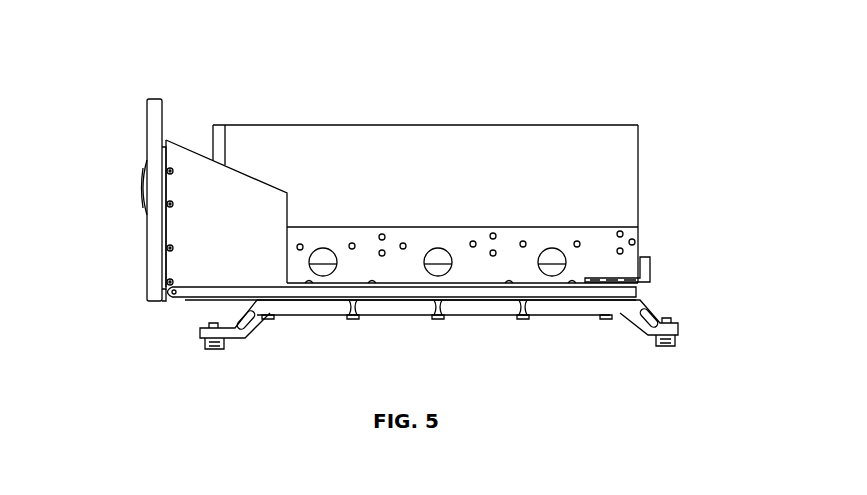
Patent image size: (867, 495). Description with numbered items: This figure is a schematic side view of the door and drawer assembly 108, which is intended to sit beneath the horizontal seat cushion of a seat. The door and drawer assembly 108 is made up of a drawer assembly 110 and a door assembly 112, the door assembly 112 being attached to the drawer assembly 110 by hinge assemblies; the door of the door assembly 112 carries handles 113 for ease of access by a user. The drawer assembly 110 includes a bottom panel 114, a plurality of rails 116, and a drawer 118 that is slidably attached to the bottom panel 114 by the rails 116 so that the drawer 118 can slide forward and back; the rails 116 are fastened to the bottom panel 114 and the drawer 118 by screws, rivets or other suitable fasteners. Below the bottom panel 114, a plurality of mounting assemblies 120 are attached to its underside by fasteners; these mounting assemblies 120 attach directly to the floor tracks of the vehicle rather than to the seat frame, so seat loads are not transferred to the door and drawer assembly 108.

The door and drawer assembly 108 is at (112, 53).
The drawer assembly 110 is at (655, 180).
The door assembly 112 is at (189, 123).
The handles 113 is at (142, 190).
The bottom panel 114 is at (200, 303).
The rails 116 is at (635, 242).
The drawer 118 is at (638, 130).
The mounting assemblies 120 is at (232, 340).